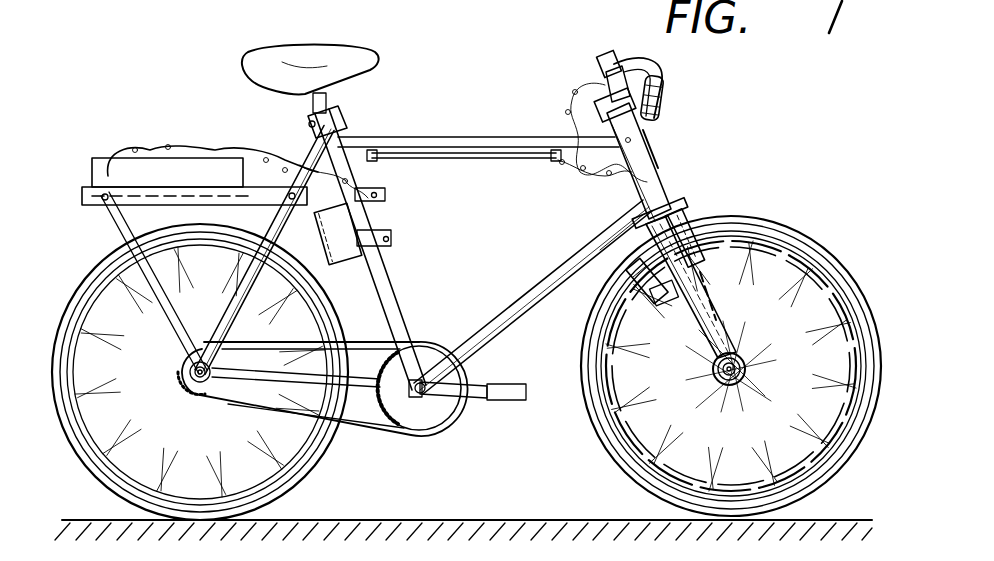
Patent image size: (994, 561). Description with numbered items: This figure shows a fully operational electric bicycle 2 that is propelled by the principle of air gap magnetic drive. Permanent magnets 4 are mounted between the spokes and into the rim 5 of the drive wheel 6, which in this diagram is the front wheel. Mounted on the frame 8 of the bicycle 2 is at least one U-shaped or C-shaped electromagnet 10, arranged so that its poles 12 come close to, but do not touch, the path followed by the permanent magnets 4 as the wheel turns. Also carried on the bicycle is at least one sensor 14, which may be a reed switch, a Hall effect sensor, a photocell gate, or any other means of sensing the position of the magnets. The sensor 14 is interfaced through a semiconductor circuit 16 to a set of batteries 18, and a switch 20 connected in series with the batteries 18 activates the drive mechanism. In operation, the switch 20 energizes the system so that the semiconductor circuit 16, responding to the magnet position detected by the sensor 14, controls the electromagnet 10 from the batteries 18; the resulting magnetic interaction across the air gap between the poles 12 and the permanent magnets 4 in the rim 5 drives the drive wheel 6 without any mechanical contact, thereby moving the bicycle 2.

The bicycle 2 is at (708, 121).
The permanent magnets 4 is at (798, 256).
The rim 5 is at (826, 462).
The drive wheel 6 is at (750, 244).
The frame 8 is at (458, 137).
The electromagnet 10 is at (638, 252).
The poles 12 is at (703, 222).
The sensor 14 is at (614, 305).
The semiconductor circuit 16 is at (362, 230).
The batteries 18 is at (112, 172).
The switch 20 is at (602, 62).